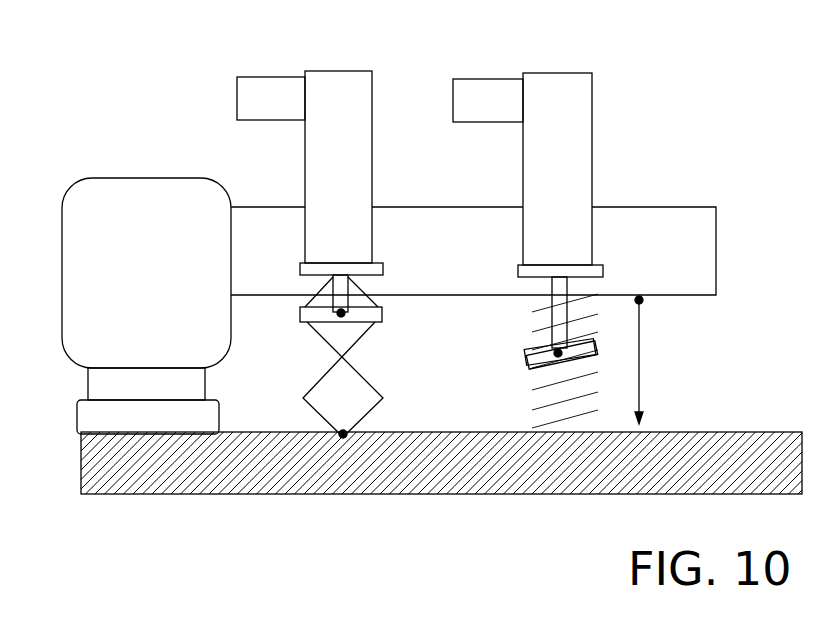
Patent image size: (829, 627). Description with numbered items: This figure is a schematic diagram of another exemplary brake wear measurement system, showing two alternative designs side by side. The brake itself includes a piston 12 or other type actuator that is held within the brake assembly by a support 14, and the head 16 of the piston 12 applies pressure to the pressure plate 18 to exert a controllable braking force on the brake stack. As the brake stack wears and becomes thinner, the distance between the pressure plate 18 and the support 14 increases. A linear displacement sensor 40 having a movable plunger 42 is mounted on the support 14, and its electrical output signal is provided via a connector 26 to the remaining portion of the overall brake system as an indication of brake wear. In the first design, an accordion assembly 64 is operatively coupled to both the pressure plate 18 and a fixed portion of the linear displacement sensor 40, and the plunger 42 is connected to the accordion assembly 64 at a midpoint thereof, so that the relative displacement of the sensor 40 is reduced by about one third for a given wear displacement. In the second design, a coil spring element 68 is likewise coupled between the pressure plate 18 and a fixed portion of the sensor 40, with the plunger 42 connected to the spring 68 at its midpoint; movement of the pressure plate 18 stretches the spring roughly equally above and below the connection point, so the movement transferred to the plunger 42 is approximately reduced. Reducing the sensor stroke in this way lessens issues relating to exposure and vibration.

The piston 12 is at (152, 289).
The support 14 is at (662, 227).
The head 16 is at (95, 422).
The pressure plate 18 is at (160, 470).
The connector 26 is at (264, 93).
The linear displacement sensor 40 is at (340, 153).
The plunger 42 is at (340, 293).
The accordion assembly 64 is at (385, 345).
The coil spring element 68 is at (524, 364).